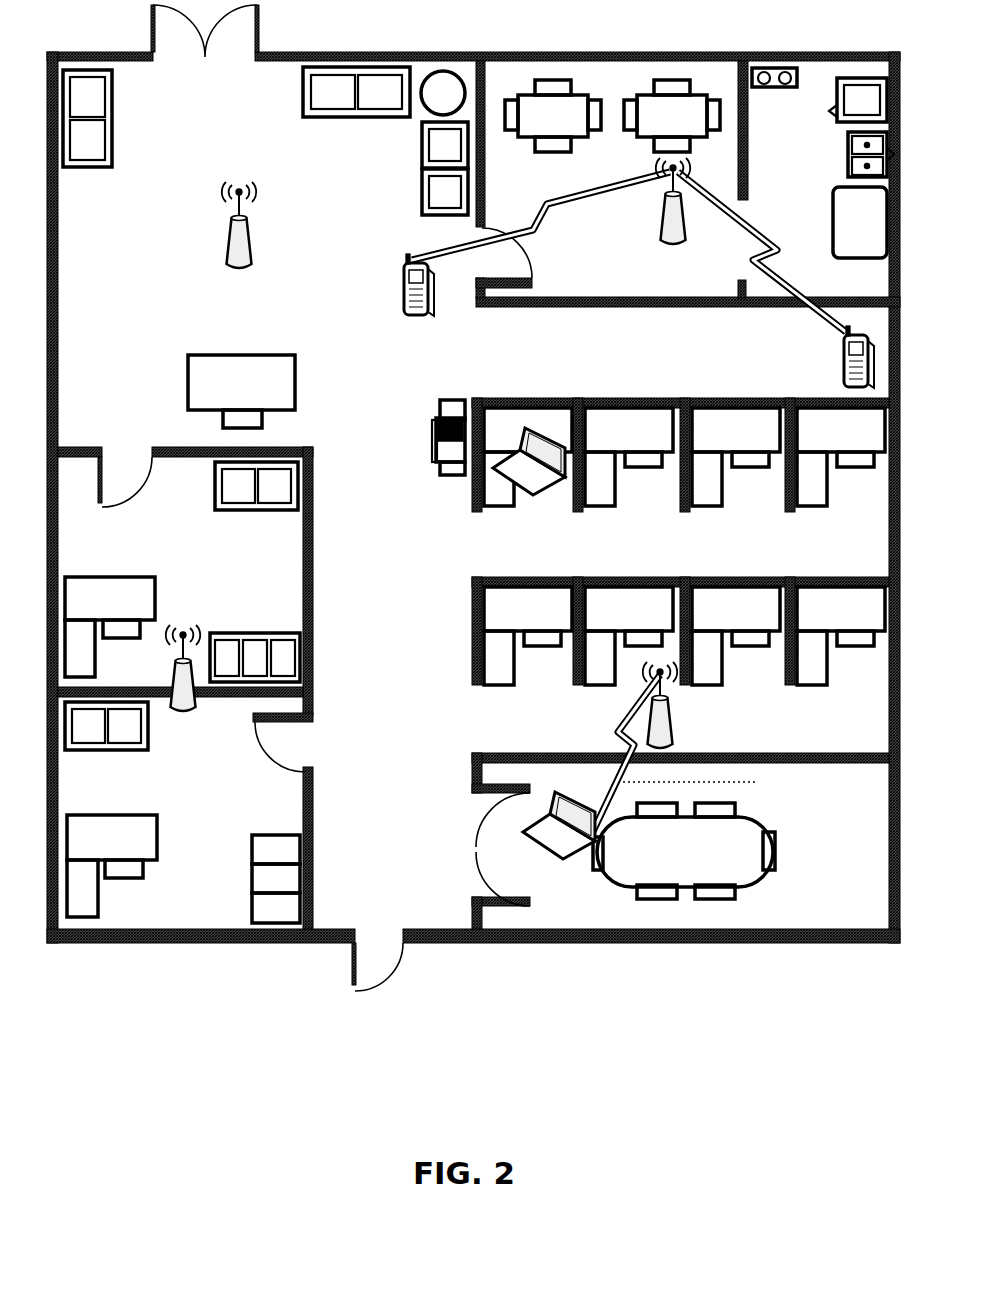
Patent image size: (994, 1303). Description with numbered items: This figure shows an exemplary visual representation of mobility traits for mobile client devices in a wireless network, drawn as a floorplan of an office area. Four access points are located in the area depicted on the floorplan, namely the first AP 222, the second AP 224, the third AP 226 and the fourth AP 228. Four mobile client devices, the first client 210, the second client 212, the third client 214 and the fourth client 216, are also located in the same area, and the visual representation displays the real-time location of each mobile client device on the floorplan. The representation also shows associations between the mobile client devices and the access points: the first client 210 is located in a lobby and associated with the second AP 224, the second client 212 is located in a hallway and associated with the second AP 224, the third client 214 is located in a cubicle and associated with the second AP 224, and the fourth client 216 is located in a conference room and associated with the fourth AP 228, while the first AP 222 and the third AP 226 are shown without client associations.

The Client_1 210 is at (412, 368).
The Client_2 212 is at (812, 388).
The Client_3 214 is at (557, 555).
The Client_4 216 is at (585, 920).
The AP_1 222 is at (256, 323).
The AP_2 224 is at (693, 298).
The AP_3 226 is at (203, 768).
The AP_4 228 is at (716, 748).